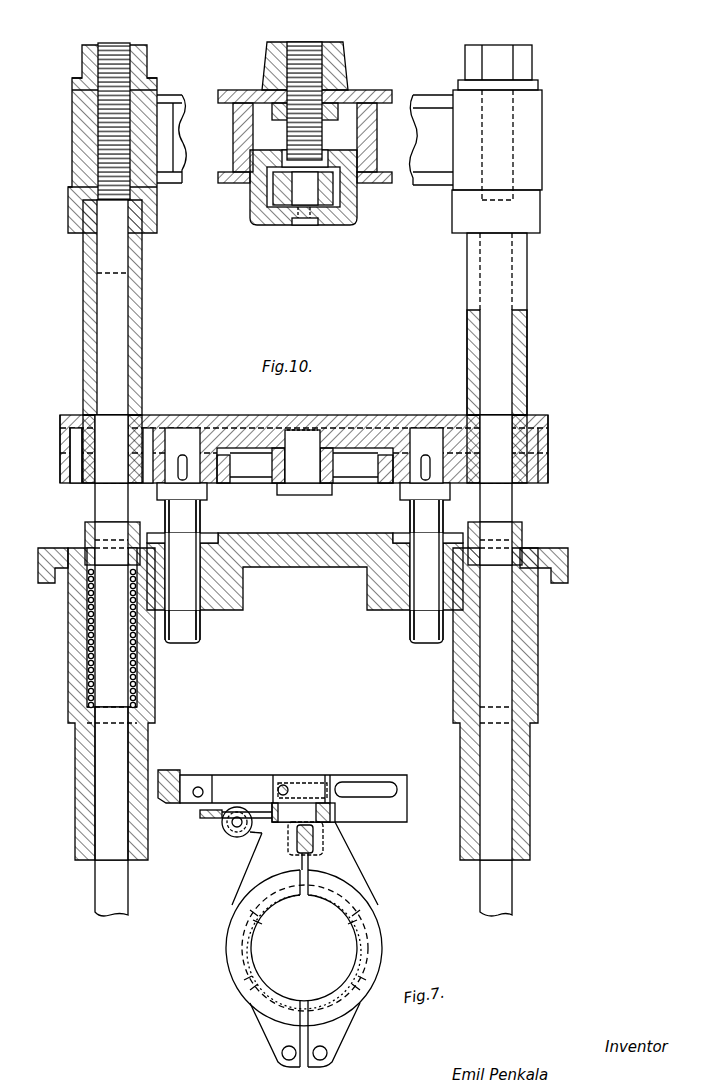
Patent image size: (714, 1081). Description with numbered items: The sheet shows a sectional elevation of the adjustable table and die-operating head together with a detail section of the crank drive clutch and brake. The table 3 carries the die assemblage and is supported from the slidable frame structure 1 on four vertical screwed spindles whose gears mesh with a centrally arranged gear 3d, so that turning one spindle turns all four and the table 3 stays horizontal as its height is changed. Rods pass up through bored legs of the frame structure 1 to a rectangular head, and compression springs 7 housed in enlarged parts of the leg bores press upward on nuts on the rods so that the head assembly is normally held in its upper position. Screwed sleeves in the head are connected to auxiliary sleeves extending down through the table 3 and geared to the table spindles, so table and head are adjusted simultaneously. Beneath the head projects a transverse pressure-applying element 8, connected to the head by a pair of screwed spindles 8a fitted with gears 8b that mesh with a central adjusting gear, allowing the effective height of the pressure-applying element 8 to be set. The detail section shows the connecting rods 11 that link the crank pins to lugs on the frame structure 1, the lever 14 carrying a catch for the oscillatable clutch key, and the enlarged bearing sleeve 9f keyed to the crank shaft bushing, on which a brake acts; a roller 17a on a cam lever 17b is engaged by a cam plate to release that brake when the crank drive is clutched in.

In FIG. 10, the slidable frame structure 1 is at (315, 555).
In FIG. 10, the table 3 is at (343, 415).
In FIG. 10, the centrally arranged gear 3d is at (252, 465).
In FIG. 10, the compression springs 7 is at (87, 652).
In FIG. 10, the pressure-applying element 8 is at (330, 220).
In FIG. 10, the screwed spindles 8a is at (305, 62).
In FIG. 10, the gears 8b is at (290, 205).
In FIG. 7, the enlarged bearing sleeve 9f is at (360, 940).
In FIG. 7, the connecting rods 11 is at (378, 815).
In FIG. 7, the lever 14 is at (228, 958).
In FIG. 7, the roller 17a is at (230, 835).
In FIG. 7, the cam lever 17b is at (262, 845).